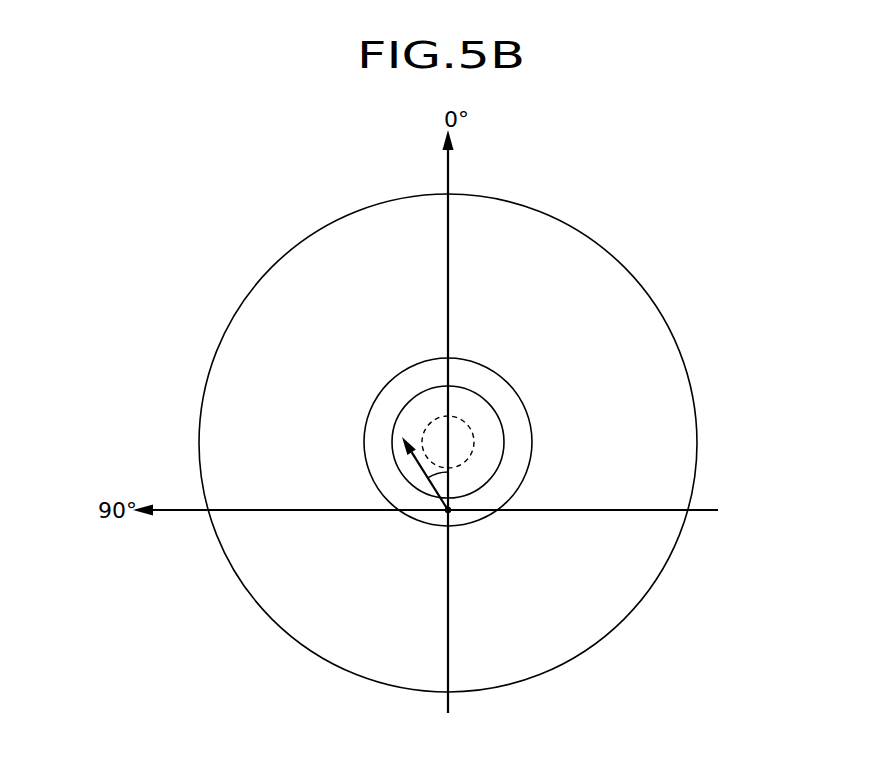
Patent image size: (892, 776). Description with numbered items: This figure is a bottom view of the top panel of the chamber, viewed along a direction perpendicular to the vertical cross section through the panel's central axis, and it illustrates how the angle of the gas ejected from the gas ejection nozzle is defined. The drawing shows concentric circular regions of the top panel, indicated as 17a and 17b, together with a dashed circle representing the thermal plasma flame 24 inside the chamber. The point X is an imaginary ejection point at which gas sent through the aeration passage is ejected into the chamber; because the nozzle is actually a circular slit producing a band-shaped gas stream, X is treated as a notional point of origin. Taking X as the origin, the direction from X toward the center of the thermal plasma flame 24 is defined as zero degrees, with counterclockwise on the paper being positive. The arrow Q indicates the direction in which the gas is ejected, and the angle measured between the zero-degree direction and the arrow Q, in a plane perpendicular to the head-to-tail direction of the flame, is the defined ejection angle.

The inner circular region of annular member 17a is at (482, 380).
The outer circular region of annular member 17b is at (233, 377).
The thermal plasma flame 24 is at (471, 427).
The arrow Q is at (418, 465).
The ejection point X is at (448, 510).